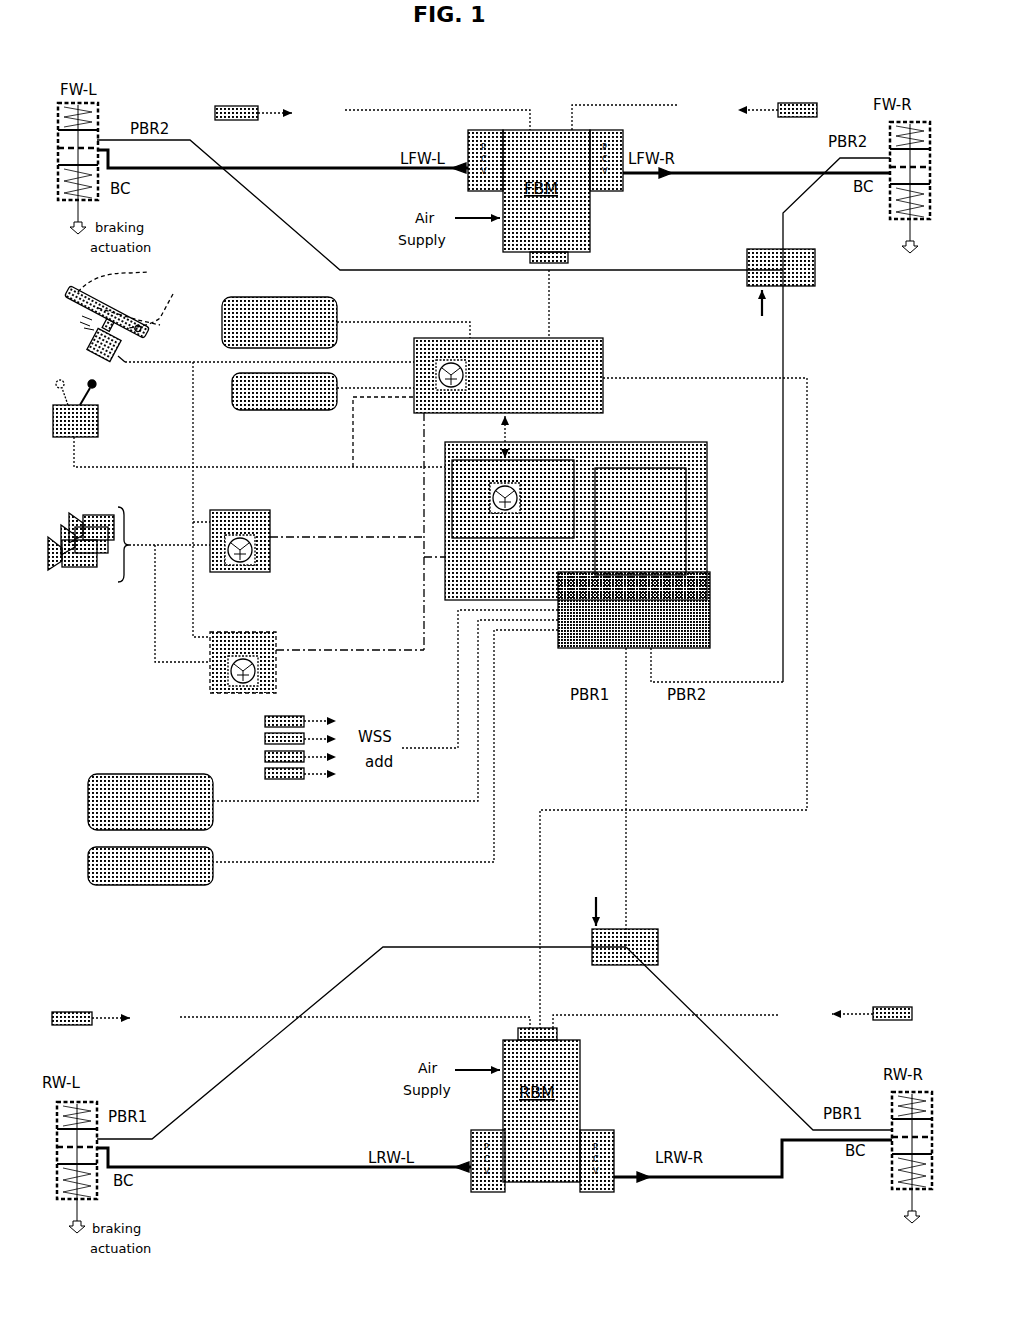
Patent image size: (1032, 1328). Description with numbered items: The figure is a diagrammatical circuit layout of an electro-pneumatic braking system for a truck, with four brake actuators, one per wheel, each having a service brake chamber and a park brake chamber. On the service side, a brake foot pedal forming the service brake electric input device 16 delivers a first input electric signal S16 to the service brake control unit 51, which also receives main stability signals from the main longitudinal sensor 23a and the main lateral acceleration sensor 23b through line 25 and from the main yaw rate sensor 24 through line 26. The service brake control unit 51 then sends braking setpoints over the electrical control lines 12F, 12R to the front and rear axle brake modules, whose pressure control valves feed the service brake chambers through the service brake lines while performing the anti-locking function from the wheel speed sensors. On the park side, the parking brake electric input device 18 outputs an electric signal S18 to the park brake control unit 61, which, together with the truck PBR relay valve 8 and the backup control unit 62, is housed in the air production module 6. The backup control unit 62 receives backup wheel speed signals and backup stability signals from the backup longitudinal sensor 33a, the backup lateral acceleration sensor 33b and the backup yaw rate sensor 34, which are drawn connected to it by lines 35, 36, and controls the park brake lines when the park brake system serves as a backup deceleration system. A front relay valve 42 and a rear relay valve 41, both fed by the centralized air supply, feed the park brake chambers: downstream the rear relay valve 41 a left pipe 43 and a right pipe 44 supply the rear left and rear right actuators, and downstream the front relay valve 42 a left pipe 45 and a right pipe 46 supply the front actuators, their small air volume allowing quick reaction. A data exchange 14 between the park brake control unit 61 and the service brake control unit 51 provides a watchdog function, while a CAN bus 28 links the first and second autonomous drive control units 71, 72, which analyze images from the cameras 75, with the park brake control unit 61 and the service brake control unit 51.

The air production module 6 is at (598, 503).
The truck PBR relay valve 8 is at (687, 513).
The electrical control line 12F is at (551, 303).
The electrical control line 12R is at (807, 782).
The data exchange 14 is at (510, 440).
The service brake electric input device 16 is at (92, 340).
The first input electric signal S16 is at (175, 366).
The parking brake electric input device 18 is at (53, 425).
The electric signal S18 is at (112, 466).
The main longitudinal sensor 23a is at (279, 308).
The main lateral acceleration sensor 23b is at (305, 306).
The main yaw rate sensor 24 is at (293, 410).
The line 25 is at (383, 322).
The line 26 is at (362, 388).
The CAN bus 28 is at (332, 537).
The backup longitudinal sensor 33a is at (150, 786).
The backup lateral acceleration sensor 33b is at (183, 786).
The backup yaw rate sensor 34 is at (148, 885).
The second acceleration sensor signal line 35 is at (323, 801).
The second yaw rate signal line 36 is at (325, 862).
The rear relay valve 41 is at (644, 929).
The front relay valve 42 is at (815, 270).
The left pipe 43 is at (248, 1057).
The right pipe 44 is at (740, 1058).
The left pipe 45 is at (285, 218).
The right pipe 46 is at (785, 212).
The service brake control unit 51 is at (350, 110).
The park brake control unit 61 is at (487, 538).
The backup control unit 62 is at (710, 612).
The first autonomous drive control unit 71 is at (238, 525).
The second autonomous drive control unit 72 is at (244, 643).
The cameras 75 is at (82, 568).